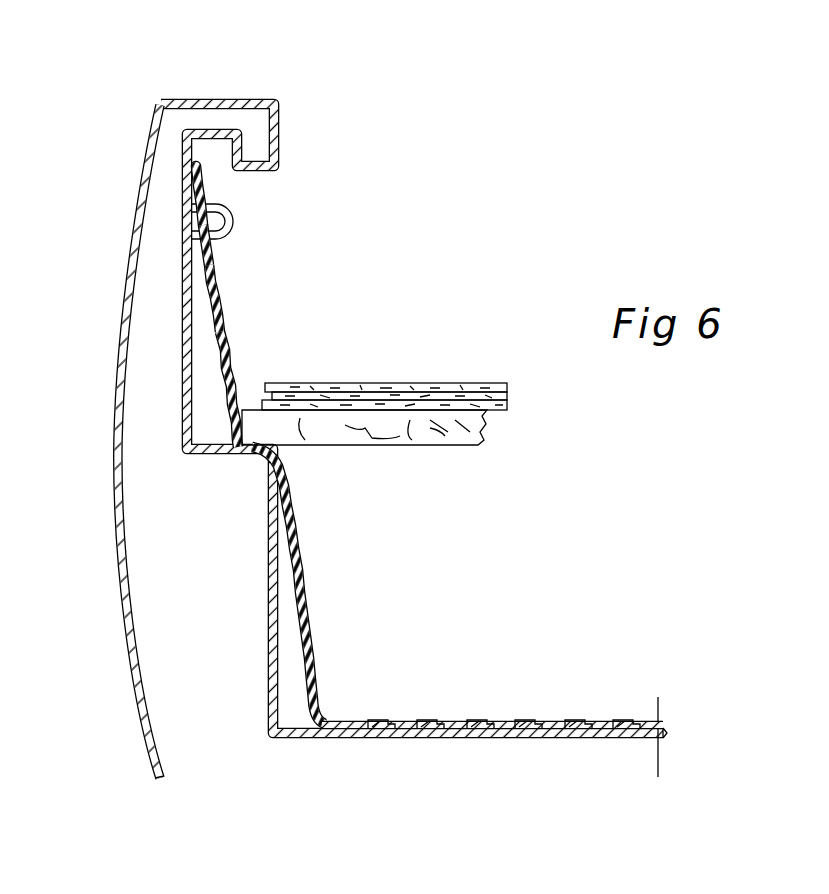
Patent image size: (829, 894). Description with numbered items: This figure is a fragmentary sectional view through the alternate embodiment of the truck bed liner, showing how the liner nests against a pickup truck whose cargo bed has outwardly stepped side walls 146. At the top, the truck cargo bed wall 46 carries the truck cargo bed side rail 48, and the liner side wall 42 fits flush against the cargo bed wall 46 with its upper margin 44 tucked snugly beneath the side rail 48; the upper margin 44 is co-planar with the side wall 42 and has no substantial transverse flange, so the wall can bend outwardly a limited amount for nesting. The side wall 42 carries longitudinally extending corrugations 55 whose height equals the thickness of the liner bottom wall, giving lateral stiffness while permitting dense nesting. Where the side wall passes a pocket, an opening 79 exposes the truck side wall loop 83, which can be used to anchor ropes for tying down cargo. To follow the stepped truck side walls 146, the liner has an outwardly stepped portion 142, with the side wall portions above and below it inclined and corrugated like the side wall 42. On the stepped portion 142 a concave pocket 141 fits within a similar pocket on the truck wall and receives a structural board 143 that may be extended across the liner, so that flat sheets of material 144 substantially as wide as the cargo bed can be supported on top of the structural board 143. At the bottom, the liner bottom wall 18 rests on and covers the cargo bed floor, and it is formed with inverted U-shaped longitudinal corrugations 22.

The truck cargo bed side rail 48 is at (245, 99).
The truck cargo bed wall 46 is at (185, 203).
The truck side wall loop 83 is at (236, 220).
The opening 79 is at (214, 238).
The upper margin 44 is at (206, 250).
The liner side wall 42 is at (208, 287).
The corrugations 55 is at (218, 383).
The flat sheets of material 144 is at (328, 385).
The structural boards 143 is at (400, 416).
The concave pockets 141 is at (280, 444).
The outwardly stepped portion 142 is at (268, 474).
The outwardly stepped side walls 146 is at (268, 537).
The liner bottom wall 18 is at (385, 718).
The longitudinal corrugations 22 is at (578, 718).